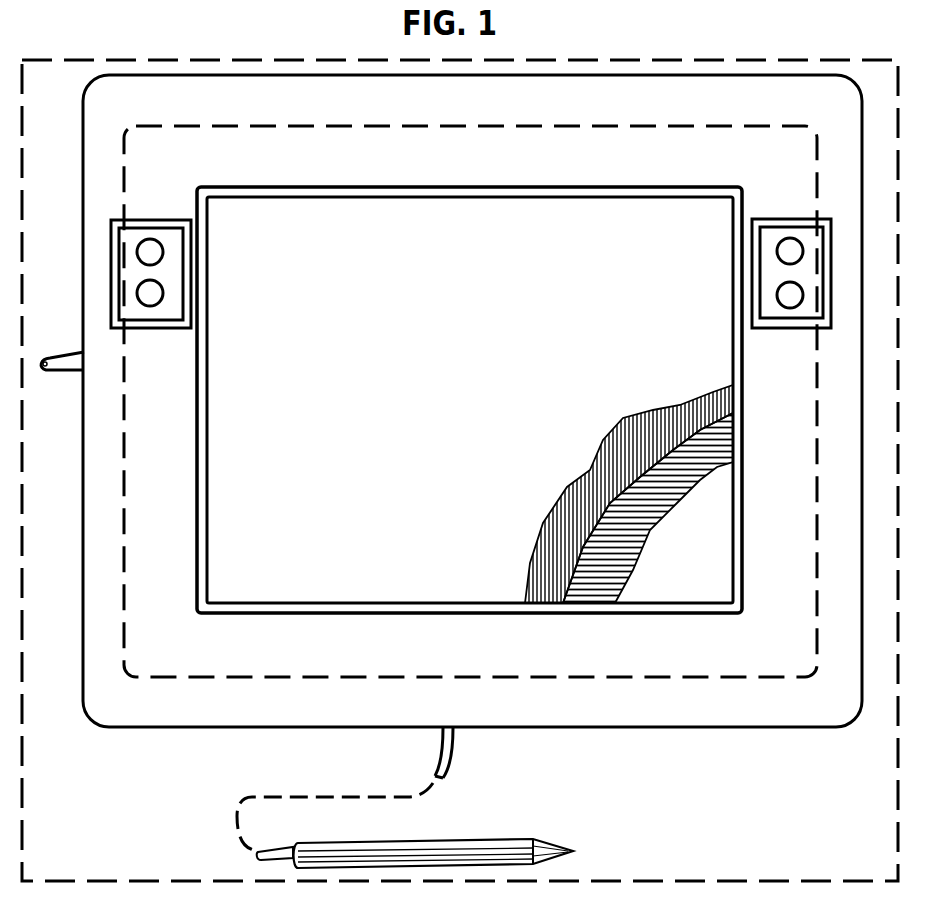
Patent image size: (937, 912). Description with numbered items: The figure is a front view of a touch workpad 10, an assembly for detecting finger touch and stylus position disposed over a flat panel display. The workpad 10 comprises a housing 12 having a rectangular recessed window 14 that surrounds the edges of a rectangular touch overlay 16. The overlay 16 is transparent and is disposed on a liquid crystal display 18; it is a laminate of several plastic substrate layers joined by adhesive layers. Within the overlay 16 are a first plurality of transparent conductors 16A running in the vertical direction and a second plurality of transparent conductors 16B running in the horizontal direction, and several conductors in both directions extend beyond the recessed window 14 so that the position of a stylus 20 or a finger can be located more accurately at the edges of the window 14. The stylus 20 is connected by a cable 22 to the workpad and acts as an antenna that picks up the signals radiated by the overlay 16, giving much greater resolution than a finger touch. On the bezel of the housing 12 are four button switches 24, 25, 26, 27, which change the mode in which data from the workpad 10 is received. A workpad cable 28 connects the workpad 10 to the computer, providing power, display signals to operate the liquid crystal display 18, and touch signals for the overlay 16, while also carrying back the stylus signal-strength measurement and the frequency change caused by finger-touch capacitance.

The touch workpad 10 is at (802, 853).
The housing 12 is at (79, 577).
The recessed window 14 is at (211, 421).
The touch overlay 16 is at (441, 366).
The first plurality of transparent conductors 16A is at (667, 419).
The second plurality of transparent conductors 16B is at (632, 565).
The liquid crystal display 18 is at (705, 583).
The stylus 20 is at (420, 842).
The cable 22 is at (449, 758).
The button switch 24 is at (792, 250).
The button switch 25 is at (792, 296).
The button switch 26 is at (148, 252).
The button switch 27 is at (148, 293).
The workpad cable 28 is at (63, 370).